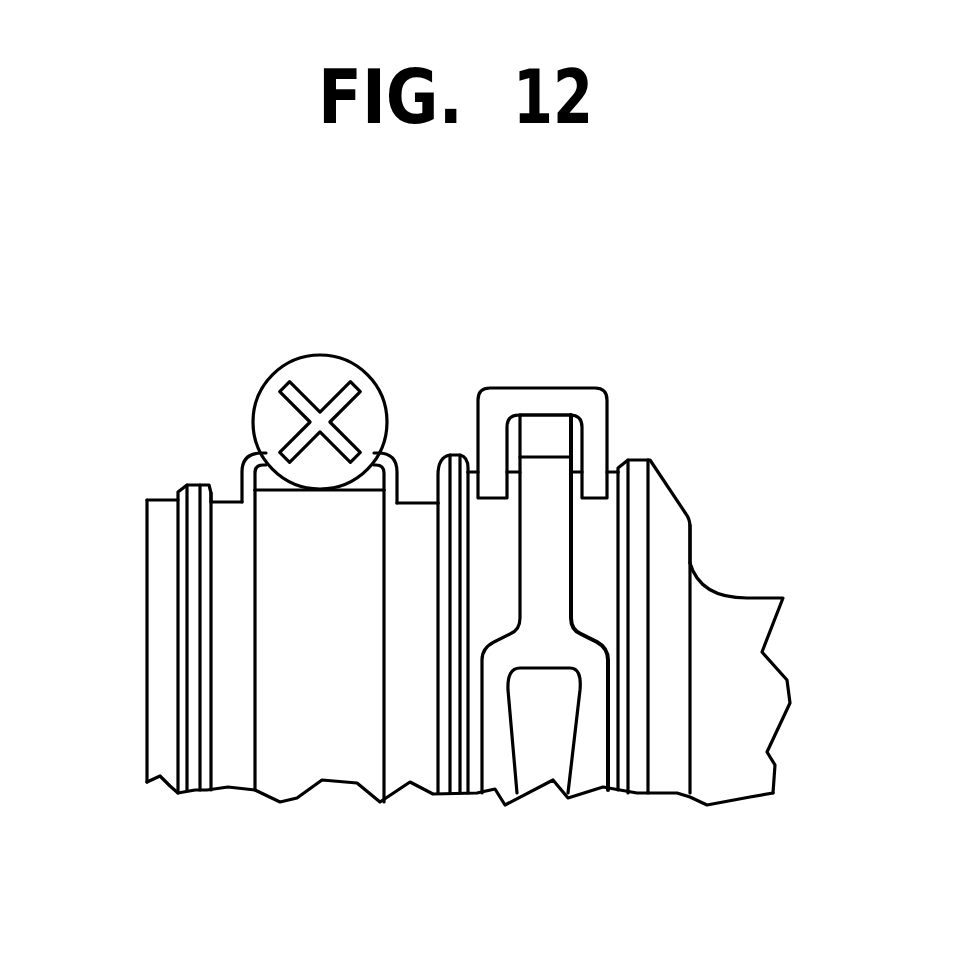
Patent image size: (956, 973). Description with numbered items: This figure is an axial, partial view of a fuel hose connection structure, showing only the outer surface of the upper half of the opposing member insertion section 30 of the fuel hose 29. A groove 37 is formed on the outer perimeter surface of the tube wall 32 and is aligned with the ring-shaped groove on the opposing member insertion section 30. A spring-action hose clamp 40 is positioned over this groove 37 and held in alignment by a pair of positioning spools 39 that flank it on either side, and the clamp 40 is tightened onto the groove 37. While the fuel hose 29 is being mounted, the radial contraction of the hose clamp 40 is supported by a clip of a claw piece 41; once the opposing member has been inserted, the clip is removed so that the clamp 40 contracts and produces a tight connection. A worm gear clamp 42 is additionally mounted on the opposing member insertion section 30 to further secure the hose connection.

The fuel hose 29 is at (748, 598).
The opposing member insertion section 30 is at (160, 505).
The tube wall 32 is at (667, 523).
The groove 37 is at (598, 603).
The positioning spools 39 is at (465, 763).
The spring-action hose clamp 40 is at (550, 477).
The claw piece 41 is at (497, 403).
The worm gear clamp 42 is at (322, 367).